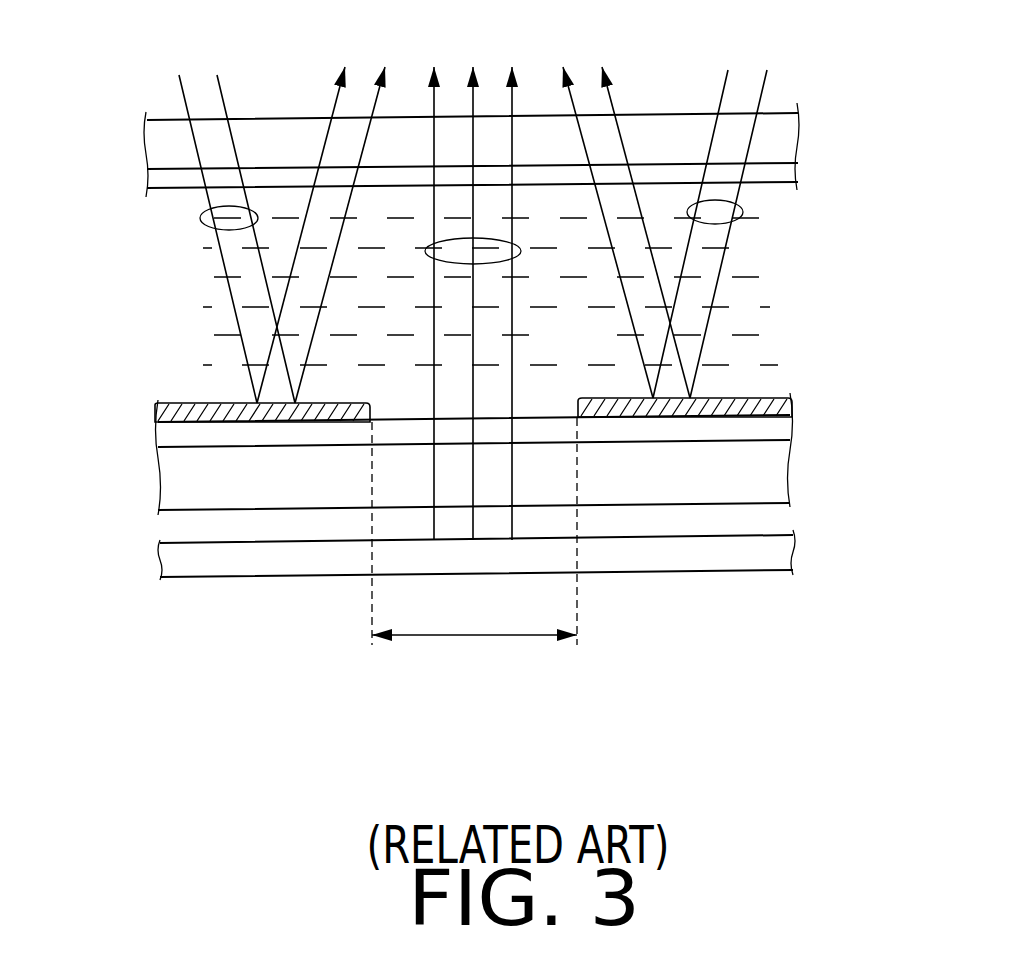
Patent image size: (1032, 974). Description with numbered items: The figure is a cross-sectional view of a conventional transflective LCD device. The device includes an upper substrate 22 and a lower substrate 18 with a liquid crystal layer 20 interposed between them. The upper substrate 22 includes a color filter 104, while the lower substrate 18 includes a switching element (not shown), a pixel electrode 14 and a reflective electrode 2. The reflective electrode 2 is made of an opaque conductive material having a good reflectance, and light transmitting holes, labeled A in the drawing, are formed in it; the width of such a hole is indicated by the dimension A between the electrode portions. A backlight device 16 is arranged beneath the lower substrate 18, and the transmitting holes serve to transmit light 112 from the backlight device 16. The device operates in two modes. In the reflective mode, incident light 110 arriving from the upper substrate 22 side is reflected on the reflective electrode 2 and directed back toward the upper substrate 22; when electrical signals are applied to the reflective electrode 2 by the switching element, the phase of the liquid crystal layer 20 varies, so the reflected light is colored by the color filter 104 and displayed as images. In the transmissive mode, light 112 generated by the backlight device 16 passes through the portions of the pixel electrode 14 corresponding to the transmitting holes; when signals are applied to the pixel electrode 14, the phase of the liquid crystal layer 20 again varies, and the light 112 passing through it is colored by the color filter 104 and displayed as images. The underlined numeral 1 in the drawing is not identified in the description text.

The pixel region 1 is at (552, 492).
The reflective electrode 2 is at (155, 410).
The pixel electrode 14 is at (445, 432).
The backlight device 16 is at (673, 552).
The lower substrate 18 is at (821, 387).
The liquid crystal layer 20 is at (821, 207).
The upper substrate 22 is at (822, 100).
The color filter 104 is at (547, 175).
The incident light 110 is at (203, 218).
The light 112 is at (516, 240).